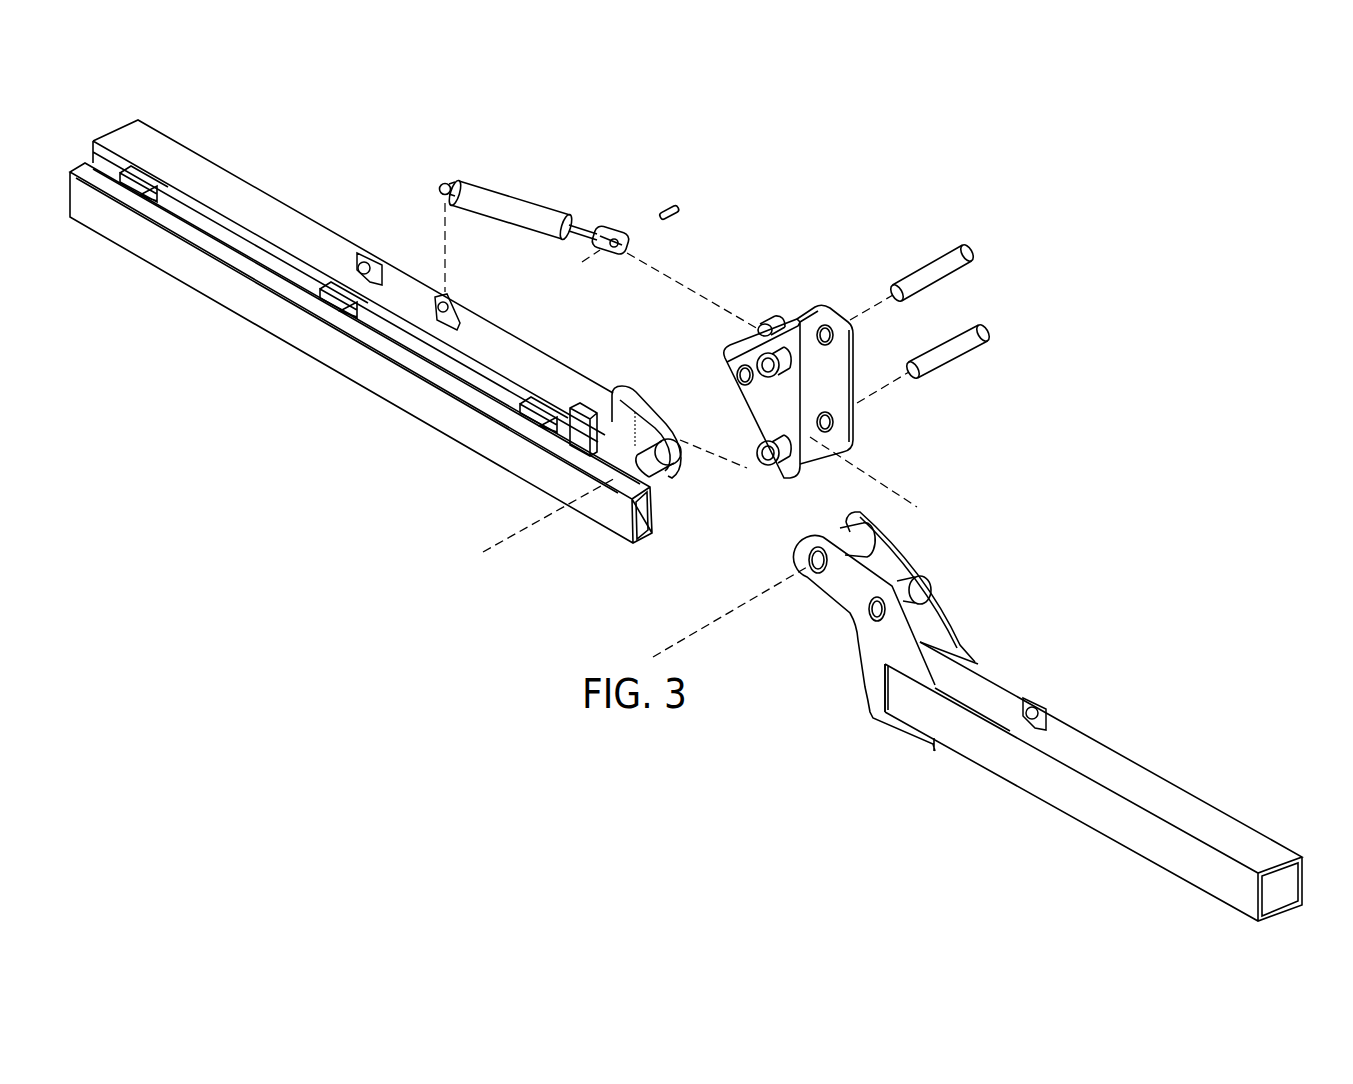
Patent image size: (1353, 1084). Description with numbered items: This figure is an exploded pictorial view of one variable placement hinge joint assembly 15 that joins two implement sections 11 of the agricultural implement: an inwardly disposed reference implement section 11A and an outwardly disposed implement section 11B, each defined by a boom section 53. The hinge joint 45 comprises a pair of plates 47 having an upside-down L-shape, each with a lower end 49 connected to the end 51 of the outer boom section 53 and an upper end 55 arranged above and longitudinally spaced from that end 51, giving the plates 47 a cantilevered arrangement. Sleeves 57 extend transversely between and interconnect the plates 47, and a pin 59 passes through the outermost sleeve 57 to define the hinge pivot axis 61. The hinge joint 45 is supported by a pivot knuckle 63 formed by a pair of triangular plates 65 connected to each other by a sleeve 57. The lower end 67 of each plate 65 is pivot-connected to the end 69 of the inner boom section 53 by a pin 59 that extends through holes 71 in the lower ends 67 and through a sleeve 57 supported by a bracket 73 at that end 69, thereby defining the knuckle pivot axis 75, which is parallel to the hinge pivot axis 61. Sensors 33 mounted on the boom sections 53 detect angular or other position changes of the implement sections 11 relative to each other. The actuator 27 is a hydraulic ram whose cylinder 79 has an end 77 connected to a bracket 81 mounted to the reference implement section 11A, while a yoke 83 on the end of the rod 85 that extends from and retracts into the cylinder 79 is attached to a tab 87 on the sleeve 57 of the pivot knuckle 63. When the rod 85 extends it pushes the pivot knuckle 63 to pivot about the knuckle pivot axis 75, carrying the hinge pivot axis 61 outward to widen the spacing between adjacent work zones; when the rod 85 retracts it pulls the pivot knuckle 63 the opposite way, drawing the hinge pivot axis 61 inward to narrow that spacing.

The implement section 11 is at (114, 263).
The reference implement section 11A is at (165, 275).
The outwardly disposed implement section 11B is at (1225, 912).
The variable placement hinge joint assembly 15 is at (1017, 190).
The actuator 27 is at (524, 188).
The sensor 33 is at (362, 262).
The hinge joint 45 is at (920, 522).
The plate 47 is at (960, 612).
The lower end 49 is at (977, 662).
The end 51 is at (947, 653).
The boom section 53 is at (248, 298).
The upper end 55 is at (903, 535).
The sleeve 57 is at (660, 465).
The pin 59 is at (936, 305).
The hinge pivot axis 61 is at (688, 637).
The pivot knuckle 63 is at (803, 280).
The plate 65 is at (840, 380).
The lower end 67 is at (786, 470).
The end 69 is at (550, 360).
The hole 71 is at (842, 428).
The bracket 73 is at (626, 388).
The knuckle pivot axis 75 is at (510, 538).
The end 77 is at (463, 181).
The cylinder 79 is at (500, 208).
The bracket 81 is at (437, 300).
The yoke 83 is at (613, 232).
The rod 85 is at (583, 228).
The tab 87 is at (773, 325).